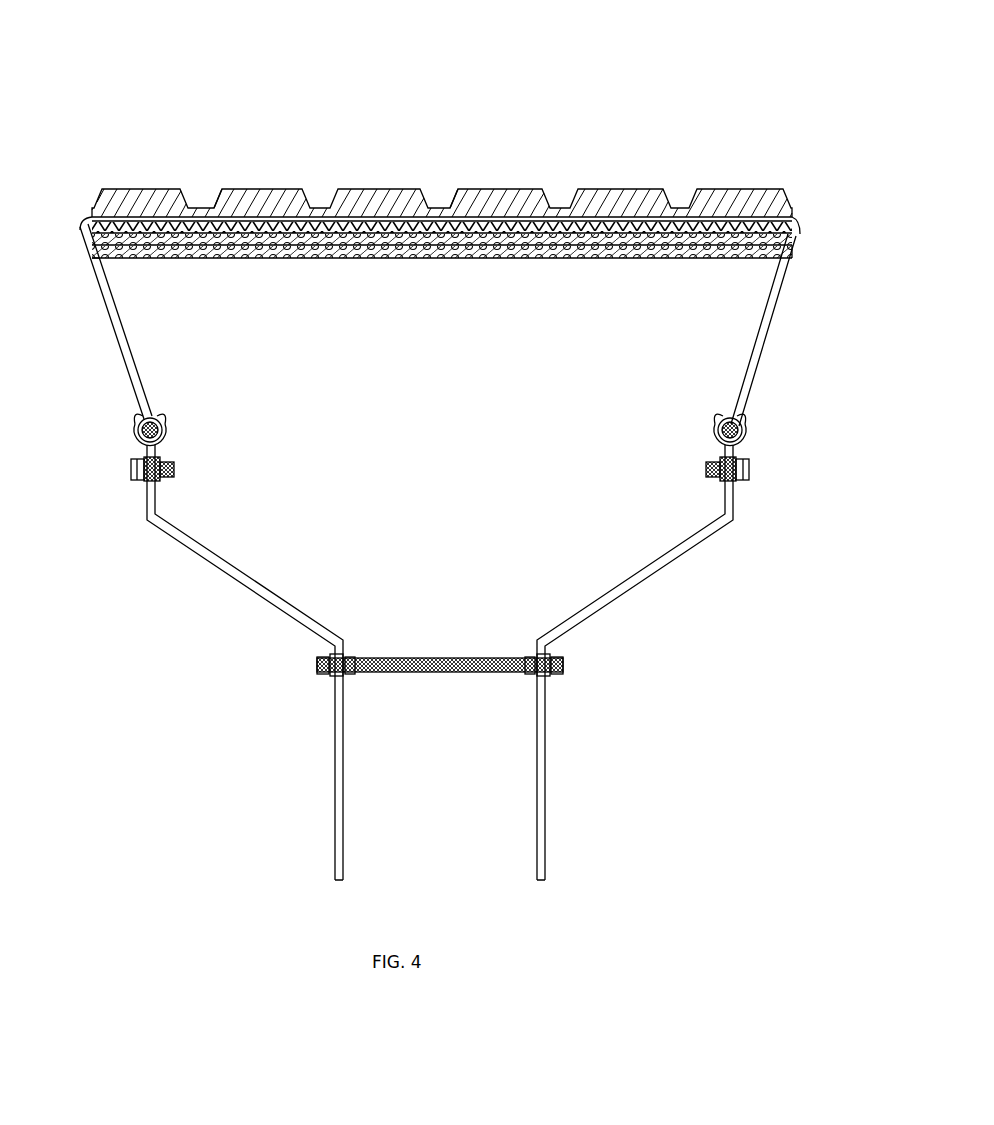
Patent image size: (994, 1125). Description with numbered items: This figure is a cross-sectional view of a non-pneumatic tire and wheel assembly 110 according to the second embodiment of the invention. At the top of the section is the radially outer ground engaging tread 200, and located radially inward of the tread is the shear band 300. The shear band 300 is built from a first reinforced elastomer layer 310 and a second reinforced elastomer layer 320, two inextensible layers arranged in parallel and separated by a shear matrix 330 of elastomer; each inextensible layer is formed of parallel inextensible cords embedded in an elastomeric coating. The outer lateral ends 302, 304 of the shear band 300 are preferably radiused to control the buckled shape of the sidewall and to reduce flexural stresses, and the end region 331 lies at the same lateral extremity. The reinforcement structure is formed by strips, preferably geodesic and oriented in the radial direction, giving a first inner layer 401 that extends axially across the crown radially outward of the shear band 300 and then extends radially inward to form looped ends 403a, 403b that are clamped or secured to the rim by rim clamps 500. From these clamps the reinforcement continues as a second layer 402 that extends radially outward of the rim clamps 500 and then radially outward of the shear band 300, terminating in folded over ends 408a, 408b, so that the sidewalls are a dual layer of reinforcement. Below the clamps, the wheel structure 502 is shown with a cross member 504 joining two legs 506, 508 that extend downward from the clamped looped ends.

The solar panel assembly 110 is at (657, 100).
The ground engaging tread 200 is at (420, 208).
The folded over end 408a is at (318, 208).
The folded over end 408b is at (488, 208).
The shear band 300 is at (442, 278).
The second reinforced elastomer layer 320 is at (214, 260).
The shear matrix 330 is at (596, 260).
The outer lateral end 304 is at (88, 222).
The first reinforced elastomer layer 310 is at (88, 250).
The outer lateral end 302 is at (795, 205).
The second end wrap 331 is at (796, 243).
The first inner layer 401 is at (128, 352).
The second layer 402 is at (439, 325).
The looped end 403a is at (746, 416).
The looped end 403b is at (132, 432).
The rim clamp 500 is at (439, 431).
The mounting frame 502 is at (440, 662).
The cross bolt 504 is at (448, 656).
The first frame leg 506 is at (212, 552).
The second frame leg 508 is at (662, 566).